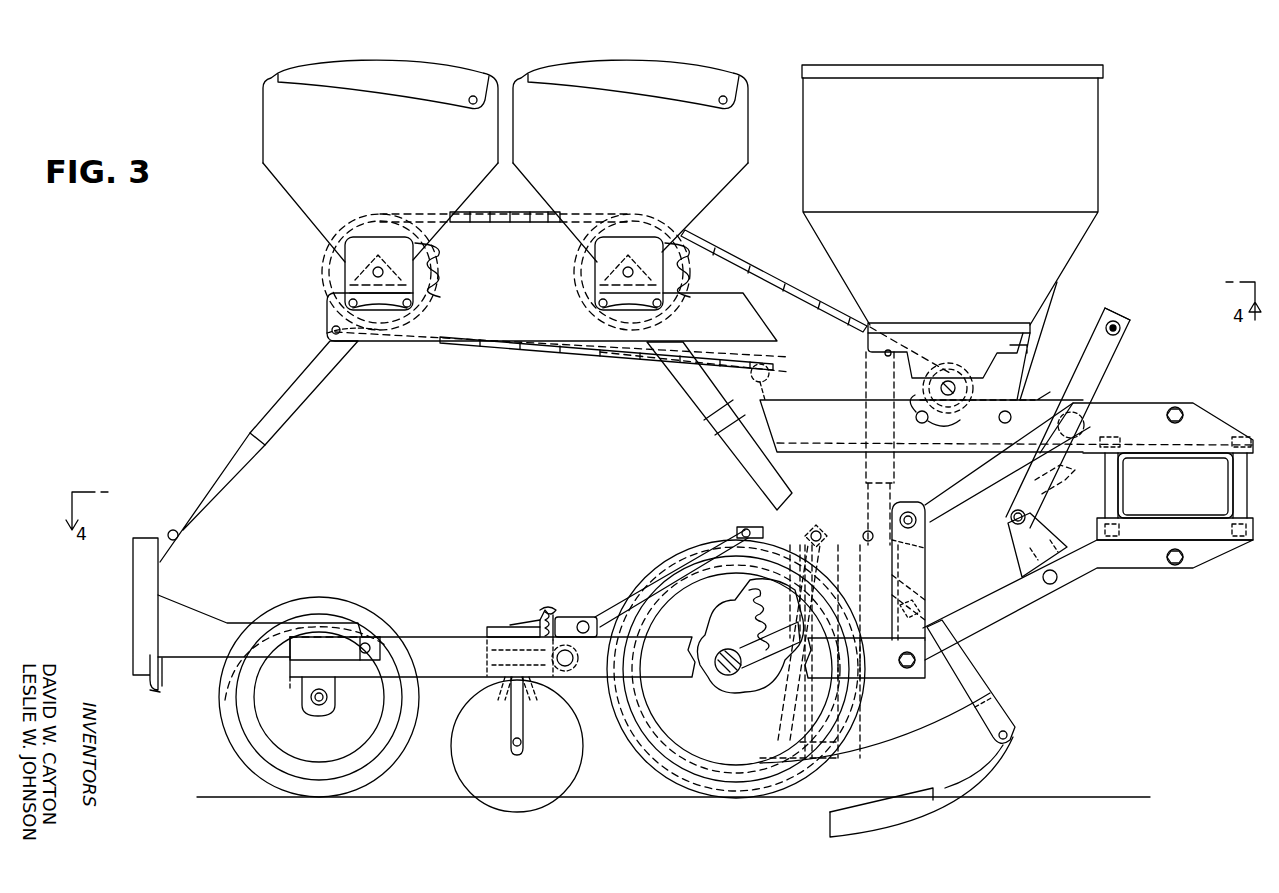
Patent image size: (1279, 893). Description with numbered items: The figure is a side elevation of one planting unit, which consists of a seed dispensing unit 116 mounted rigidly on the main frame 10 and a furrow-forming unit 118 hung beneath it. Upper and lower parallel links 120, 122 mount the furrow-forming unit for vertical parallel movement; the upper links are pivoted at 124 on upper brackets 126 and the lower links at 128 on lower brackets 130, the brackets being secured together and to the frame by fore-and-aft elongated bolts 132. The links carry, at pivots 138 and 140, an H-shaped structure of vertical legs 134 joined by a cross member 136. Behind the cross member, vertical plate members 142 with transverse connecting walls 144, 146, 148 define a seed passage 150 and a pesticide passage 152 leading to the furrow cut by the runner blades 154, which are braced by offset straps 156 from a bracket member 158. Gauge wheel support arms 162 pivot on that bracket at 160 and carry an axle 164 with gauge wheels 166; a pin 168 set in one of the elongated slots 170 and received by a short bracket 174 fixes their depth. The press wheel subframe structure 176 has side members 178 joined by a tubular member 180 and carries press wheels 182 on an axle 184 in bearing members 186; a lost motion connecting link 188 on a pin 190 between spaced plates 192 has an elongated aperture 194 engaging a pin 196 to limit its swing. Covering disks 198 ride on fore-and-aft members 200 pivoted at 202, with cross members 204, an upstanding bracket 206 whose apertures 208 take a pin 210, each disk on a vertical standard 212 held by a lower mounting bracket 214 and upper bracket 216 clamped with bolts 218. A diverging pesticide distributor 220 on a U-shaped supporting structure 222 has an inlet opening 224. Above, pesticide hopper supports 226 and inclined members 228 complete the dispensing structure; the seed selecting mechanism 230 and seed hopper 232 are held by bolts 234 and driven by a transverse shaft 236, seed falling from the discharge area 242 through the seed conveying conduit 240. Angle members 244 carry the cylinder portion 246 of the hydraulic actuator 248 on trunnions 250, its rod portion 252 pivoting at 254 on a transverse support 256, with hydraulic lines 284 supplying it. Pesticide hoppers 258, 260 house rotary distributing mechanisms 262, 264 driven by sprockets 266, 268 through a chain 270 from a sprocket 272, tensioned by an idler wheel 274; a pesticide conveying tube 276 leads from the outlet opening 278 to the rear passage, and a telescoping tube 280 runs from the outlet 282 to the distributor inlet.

The main frame 10 is at (1132, 550).
The seed dispensing unit 116 is at (236, 238).
The furrow-forming unit 118 is at (138, 482).
The upper parallel links 120 is at (952, 490).
The lower parallel links 122 is at (1022, 604).
The pivot 124 is at (1175, 405).
The upper brackets 126 is at (1218, 424).
The pivot 128 is at (1175, 566).
The lower brackets 130 is at (1224, 548).
The fore-and-aft elongated bolts 132 is at (1233, 487).
The vertical legs 134 is at (926, 600).
The transverse cross member 136 is at (926, 560).
The pivot 138 is at (908, 510).
The pivot 140 is at (911, 672).
The vertical plate members 142 is at (840, 577).
The transverse connecting wall 144 is at (858, 708).
The transverse connecting wall 146 is at (845, 749).
The transverse connecting wall 148 is at (775, 714).
The seed passage 150 is at (864, 516).
The pesticide passage 152 is at (819, 518).
The furrow-opener runner blades 154 is at (988, 762).
The offset straps 156 is at (975, 678).
The bracket member 158 is at (930, 580).
The pivot 160 is at (932, 616).
The gauge wheel support arms 162 is at (855, 672).
The transverse axle 164 is at (718, 680).
The gauge wheels 166 is at (640, 752).
The pin 168 is at (725, 625).
The elongated slots 170 is at (740, 600).
The short bracket 174 is at (700, 660).
The press wheel subframe structure 176 is at (418, 588).
The fore-and-aft side members 178 is at (300, 678).
The transverse tubular member 180 is at (571, 668).
The press wheels 182 is at (225, 740).
The transverse axle 184 is at (316, 708).
The bearing members 186 is at (305, 697).
The lost motion connecting link 188 is at (610, 600).
The pin 190 is at (583, 612).
The spaced plates 192 is at (554, 600).
The elongated aperture 194 is at (736, 540).
The pin 196 is at (745, 526).
The disks 198 is at (483, 797).
The fore-and-aft members 200 is at (384, 672).
The pivot 202 is at (368, 630).
The cross members 204 is at (503, 690).
The upstanding bracket 206 is at (515, 623).
The apertures 208 is at (538, 608).
The pin 210 is at (547, 610).
The vertical standard 212 is at (510, 726).
The lower mounting bracket 214 is at (531, 690).
The upper bracket 216 is at (486, 633).
The bolts 218 is at (472, 677).
The diverging pesticide distributor 220 is at (133, 603).
The U-shaped supporting structure 222 is at (200, 621).
The inlet opening 224 is at (168, 532).
The pesticide hopper supports 226 is at (489, 344).
The inclined members 228 is at (737, 345).
The seed selecting mechanism 230 is at (1026, 366).
The seed hopper 232 is at (1098, 155).
The bolts 234 is at (998, 420).
The transverse shaft 236 is at (955, 378).
The seed conveying conduit 240 is at (866, 464).
The discharge area 242 is at (860, 350).
The angle members 244 is at (1030, 401).
The cylinder portion 246 is at (1108, 357).
The hydraulic actuator 248 is at (1146, 339).
The trunnions 250 is at (1098, 410).
The rod portion 252 is at (1046, 478).
The pivot 254 is at (1029, 514).
The transverse support 256 is at (1012, 547).
The forward pesticide hopper 258 is at (640, 70).
The rear pesticide hopper 260 is at (402, 70).
The rotary distributing mechanism 262 is at (583, 276).
The rotary distributing mechanism 264 is at (333, 276).
The sprocket 266 is at (594, 262).
The sprocket 268 is at (343, 266).
The chain 270 is at (735, 258).
The sprocket 272 is at (932, 328).
The adjustable idler wheel 274 is at (1006, 422).
The pesticide conveying tube 276 is at (705, 405).
The outlet opening 278 is at (603, 352).
The telescoping tube 280 is at (292, 394).
The outlet 282 is at (383, 344).
The hydraulic lines 284 is at (1120, 322).